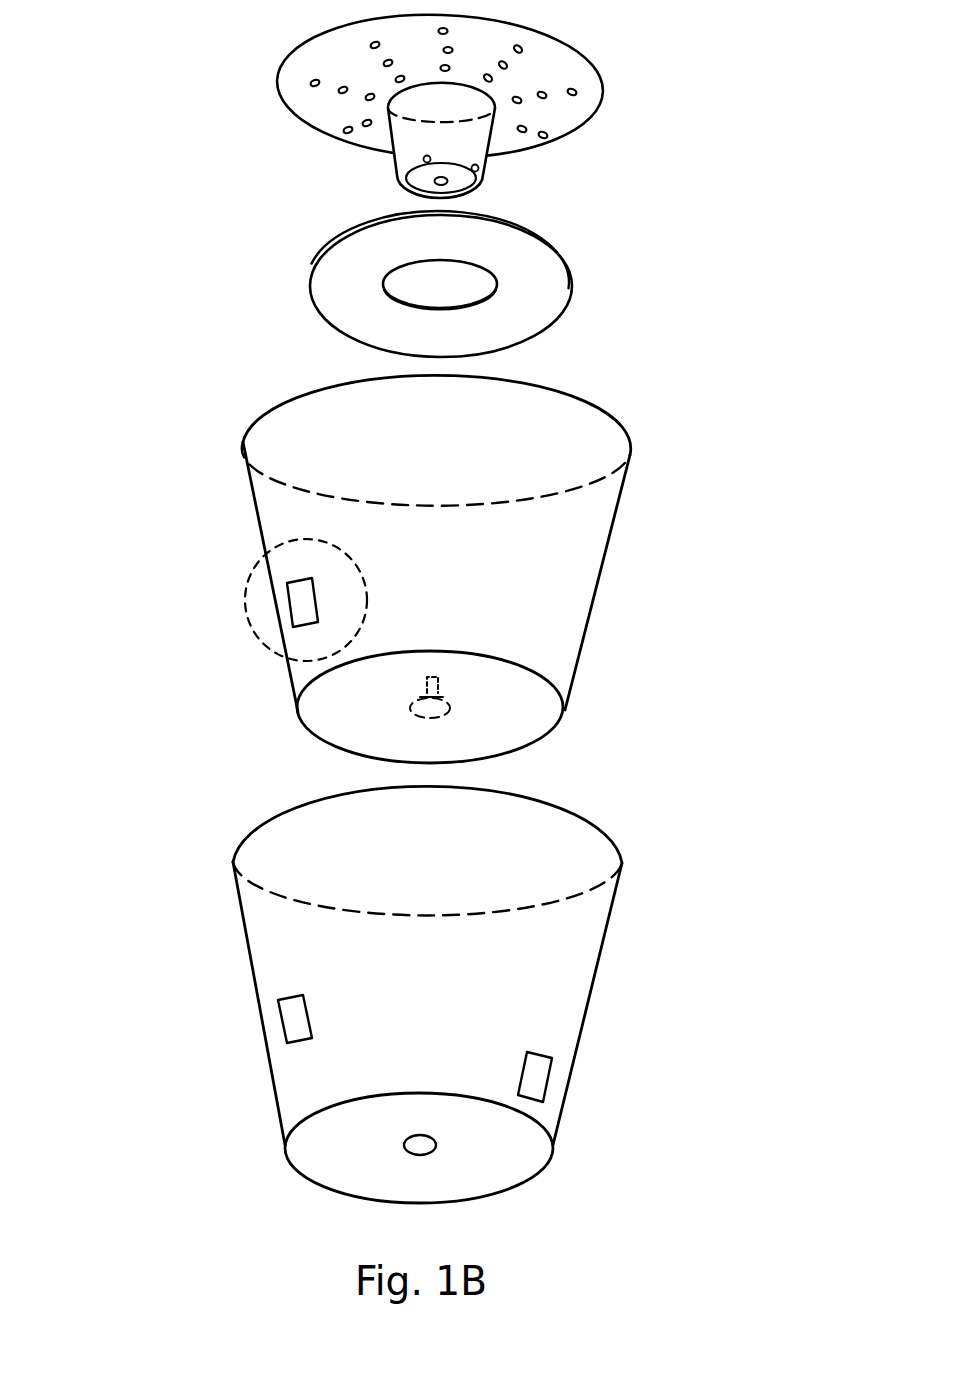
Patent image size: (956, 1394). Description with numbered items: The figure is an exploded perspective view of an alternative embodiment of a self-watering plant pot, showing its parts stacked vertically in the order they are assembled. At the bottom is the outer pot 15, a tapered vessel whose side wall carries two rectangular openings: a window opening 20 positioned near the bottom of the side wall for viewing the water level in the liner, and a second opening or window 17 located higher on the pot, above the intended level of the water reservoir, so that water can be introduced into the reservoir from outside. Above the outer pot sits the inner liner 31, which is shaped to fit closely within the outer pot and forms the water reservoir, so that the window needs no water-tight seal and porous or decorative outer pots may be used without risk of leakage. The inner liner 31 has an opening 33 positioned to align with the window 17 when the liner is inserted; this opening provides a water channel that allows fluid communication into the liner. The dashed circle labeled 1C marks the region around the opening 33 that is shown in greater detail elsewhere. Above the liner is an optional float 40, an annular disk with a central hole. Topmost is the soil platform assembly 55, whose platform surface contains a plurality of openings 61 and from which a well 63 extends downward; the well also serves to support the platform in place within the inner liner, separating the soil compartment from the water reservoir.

The soil platform assembly 55 is at (539, 137).
The openings 61 is at (574, 89).
The well 63 is at (472, 138).
The float 40 is at (540, 307).
The inner liner 31 is at (416, 569).
The detail area of FIG. 1C is at (238, 585).
The opening 33 is at (302, 615).
The outer pot 15 is at (415, 994).
The window 17 is at (297, 1022).
The window opening 20 is at (533, 1073).